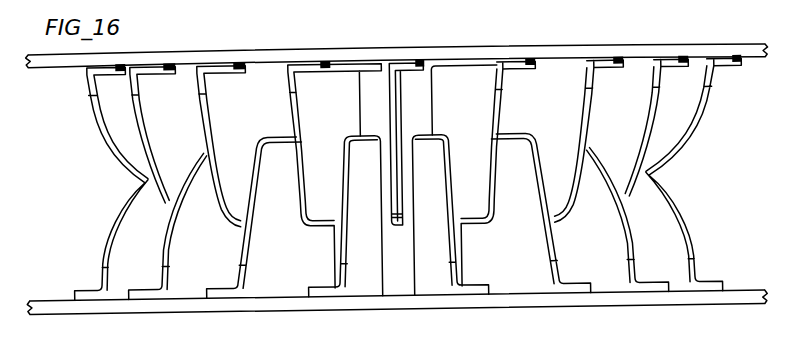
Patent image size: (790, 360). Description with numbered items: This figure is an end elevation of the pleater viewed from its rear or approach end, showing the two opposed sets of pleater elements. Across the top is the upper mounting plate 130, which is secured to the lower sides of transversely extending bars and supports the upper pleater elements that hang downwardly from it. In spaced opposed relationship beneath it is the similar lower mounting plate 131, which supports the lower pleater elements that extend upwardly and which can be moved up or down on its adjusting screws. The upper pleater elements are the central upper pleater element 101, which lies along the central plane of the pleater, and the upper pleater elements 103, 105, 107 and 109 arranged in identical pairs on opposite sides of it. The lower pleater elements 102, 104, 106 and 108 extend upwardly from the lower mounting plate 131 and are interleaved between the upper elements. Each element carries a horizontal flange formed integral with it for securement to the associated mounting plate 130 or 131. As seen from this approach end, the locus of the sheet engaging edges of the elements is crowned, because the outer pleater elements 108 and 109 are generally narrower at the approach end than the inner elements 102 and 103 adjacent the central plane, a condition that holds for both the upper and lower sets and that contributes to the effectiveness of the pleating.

The central upper pleater element 101 is at (403, 105).
The lower pleater element 102 is at (375, 265).
The upper pleater element 103 is at (331, 114).
The lower pleater element 104 is at (295, 265).
The upper pleater element 105 is at (246, 114).
The lower pleater element 106 is at (216, 265).
The upper pleater element 107 is at (176, 114).
The lower pleater element 108 is at (143, 265).
The upper pleater element 109 is at (128, 114).
The upper mounting plate 130 is at (209, 59).
The lower mounting plate 131 is at (181, 307).